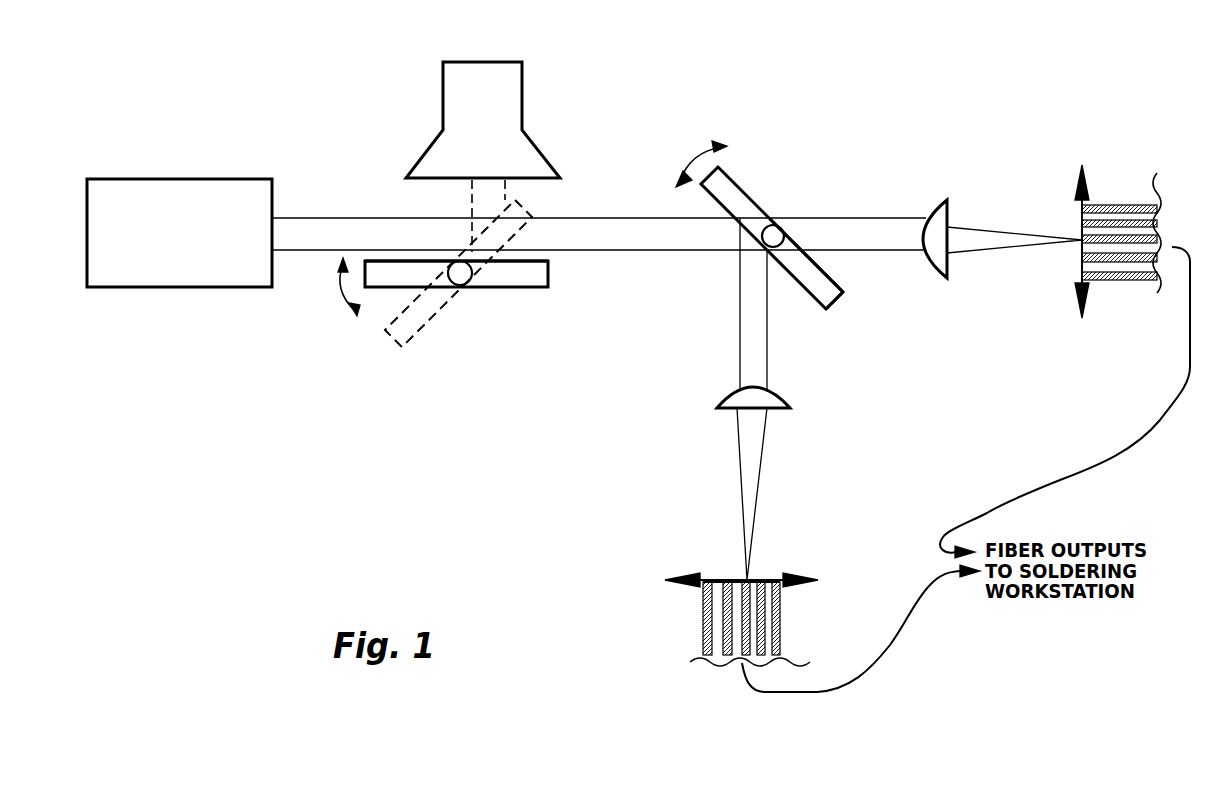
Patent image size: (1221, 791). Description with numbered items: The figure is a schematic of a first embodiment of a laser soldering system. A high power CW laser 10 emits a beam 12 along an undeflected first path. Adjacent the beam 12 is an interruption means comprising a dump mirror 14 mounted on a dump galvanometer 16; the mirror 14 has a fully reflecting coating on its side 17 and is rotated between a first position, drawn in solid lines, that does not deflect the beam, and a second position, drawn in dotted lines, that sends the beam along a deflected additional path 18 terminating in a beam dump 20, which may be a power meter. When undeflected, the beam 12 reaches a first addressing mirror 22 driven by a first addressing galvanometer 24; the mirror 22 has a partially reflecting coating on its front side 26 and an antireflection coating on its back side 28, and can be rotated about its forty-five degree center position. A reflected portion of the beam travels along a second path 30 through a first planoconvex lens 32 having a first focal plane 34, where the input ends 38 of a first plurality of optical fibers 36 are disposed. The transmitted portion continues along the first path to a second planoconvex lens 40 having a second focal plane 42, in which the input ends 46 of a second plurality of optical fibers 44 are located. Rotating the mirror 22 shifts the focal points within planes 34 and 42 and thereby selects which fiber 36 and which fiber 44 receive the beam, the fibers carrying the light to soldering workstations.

The high power CW laser 10 is at (197, 275).
The beam 12 is at (310, 227).
The dump mirror 14 is at (535, 280).
The dump galvanometer 16 is at (465, 279).
The side of mirror 17 is at (538, 258).
The deflected additional path 18 is at (510, 193).
The beam dump 20 is at (510, 100).
The first addressing mirror 22 is at (837, 302).
The first addressing galvanometer 24 is at (773, 232).
The front side 26 is at (813, 292).
The back side 28 is at (835, 274).
The second path 30 is at (742, 340).
The first lens 32 is at (720, 400).
The first focal plane 34 is at (764, 591).
The optical fibers 36 is at (788, 628).
The input ends 38 is at (782, 592).
The second lens 40 is at (947, 202).
The second focal plane 42 is at (1078, 192).
The optical fibers 44 is at (1128, 282).
The input ends 46 is at (1088, 284).